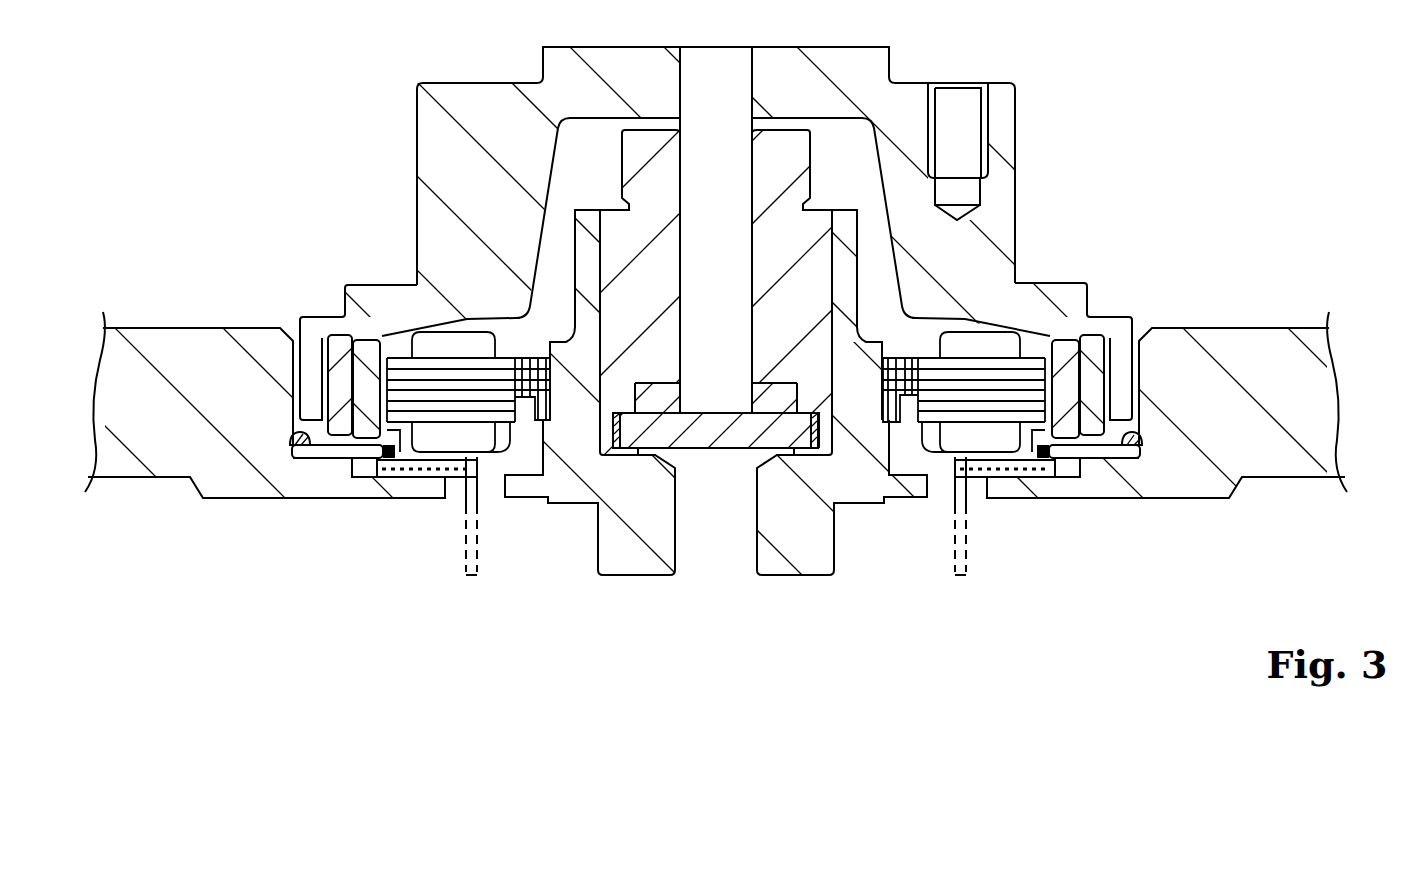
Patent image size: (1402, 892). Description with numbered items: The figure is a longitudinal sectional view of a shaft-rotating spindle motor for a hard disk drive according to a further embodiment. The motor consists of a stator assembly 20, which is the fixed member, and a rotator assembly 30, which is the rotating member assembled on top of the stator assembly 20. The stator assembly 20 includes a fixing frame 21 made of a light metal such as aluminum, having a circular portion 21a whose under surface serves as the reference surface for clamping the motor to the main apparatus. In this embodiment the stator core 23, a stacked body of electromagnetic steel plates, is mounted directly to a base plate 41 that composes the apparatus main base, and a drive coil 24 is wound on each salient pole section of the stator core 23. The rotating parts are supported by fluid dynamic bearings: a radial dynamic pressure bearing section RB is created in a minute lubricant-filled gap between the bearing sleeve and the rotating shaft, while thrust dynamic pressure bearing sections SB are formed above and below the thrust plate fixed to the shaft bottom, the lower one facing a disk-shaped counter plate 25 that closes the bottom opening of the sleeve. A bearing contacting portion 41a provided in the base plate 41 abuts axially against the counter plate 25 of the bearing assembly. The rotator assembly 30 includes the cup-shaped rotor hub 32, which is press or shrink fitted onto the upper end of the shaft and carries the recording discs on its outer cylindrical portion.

The rotator assembly 30 is at (1033, 103).
The rotor hub 32 is at (1003, 210).
The stator core 23 is at (975, 390).
The radial dynamic pressure bearing section RB is at (678, 222).
The thrust dynamic pressure bearing section SB is at (790, 420).
The counter plate 25 is at (688, 453).
The bearing contacting portion 41a is at (753, 443).
The base plate 41 is at (860, 477).
The stator assembly 20 is at (380, 508).
The drive coil 24 is at (977, 435).
The circular portion 21a is at (243, 470).
The fixing frame 21 is at (1172, 475).